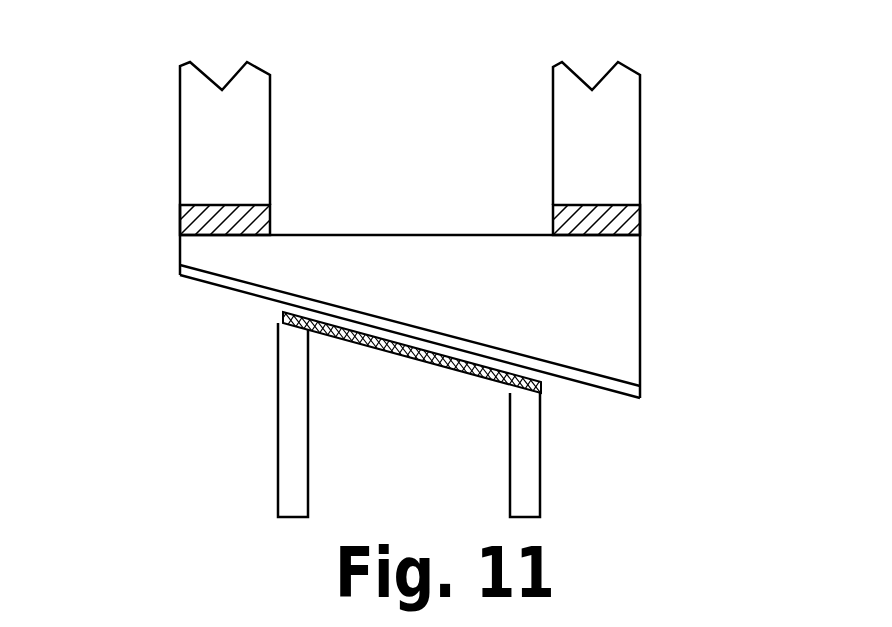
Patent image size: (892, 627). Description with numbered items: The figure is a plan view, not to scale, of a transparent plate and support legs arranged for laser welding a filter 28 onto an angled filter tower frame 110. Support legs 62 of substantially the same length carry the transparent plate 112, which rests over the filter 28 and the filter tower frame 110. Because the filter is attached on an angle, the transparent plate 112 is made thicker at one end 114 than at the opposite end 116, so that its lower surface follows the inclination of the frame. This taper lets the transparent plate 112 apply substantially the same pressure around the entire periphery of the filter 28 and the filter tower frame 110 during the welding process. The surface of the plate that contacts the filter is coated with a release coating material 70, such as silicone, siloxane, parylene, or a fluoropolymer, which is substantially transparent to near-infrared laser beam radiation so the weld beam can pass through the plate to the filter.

The support legs 62 is at (610, 149).
The transparent plate 112 is at (580, 304).
The end 116 is at (176, 254).
The end 114 is at (645, 308).
The release coating material 70 is at (617, 385).
The filter 28 is at (377, 356).
The filter tower frame 110 is at (527, 460).